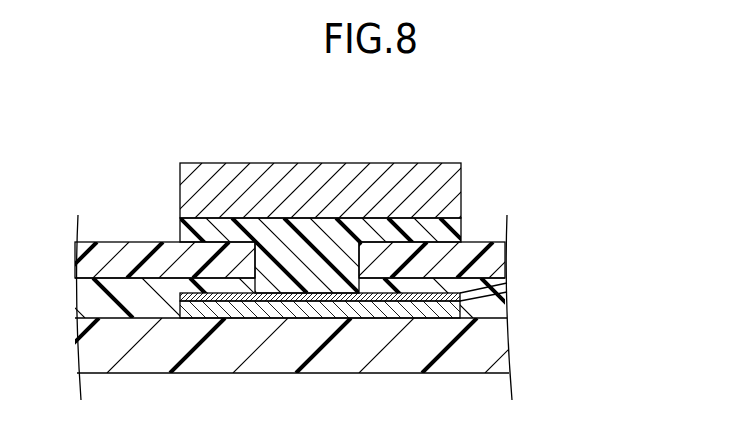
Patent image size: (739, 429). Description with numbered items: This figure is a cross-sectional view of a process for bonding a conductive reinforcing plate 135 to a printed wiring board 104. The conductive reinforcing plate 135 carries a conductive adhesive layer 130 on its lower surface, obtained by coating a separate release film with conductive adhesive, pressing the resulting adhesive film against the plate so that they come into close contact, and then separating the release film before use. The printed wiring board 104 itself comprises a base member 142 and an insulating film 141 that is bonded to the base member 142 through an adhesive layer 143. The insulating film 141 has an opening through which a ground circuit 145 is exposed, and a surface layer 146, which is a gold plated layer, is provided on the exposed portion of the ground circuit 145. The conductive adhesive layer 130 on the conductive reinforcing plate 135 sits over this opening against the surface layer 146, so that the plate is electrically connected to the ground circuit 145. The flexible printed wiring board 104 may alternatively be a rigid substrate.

The printed wiring board 104 is at (608, 240).
The conductive adhesive layer 130 is at (460, 230).
The conductive reinforcing plate 135 is at (460, 190).
The insulating film 141 is at (505, 256).
The base member 142 is at (510, 357).
The adhesive layer 143 is at (510, 318).
The ground circuit 145 is at (505, 307).
The surface layer 146 is at (505, 285).